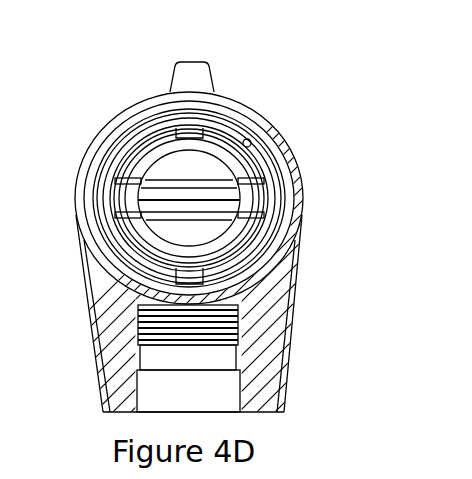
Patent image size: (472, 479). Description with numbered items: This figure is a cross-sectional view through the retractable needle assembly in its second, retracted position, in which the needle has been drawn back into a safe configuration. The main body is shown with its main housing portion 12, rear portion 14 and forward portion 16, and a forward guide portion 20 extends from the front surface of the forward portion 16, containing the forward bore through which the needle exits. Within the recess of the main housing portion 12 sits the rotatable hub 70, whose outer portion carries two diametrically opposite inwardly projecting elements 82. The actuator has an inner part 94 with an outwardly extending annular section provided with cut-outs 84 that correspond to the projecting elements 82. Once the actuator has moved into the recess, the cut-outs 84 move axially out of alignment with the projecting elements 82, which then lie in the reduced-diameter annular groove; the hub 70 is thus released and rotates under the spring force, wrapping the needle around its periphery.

The main housing portion 12 is at (112, 208).
The rear portion 14 is at (225, 402).
The forward portion 16 is at (135, 112).
The forward guide portion 20 is at (172, 84).
The hub 70 is at (264, 157).
The projecting elements 82 is at (190, 125).
The cut-outs 84 is at (112, 212).
The inner part 94 is at (150, 172).